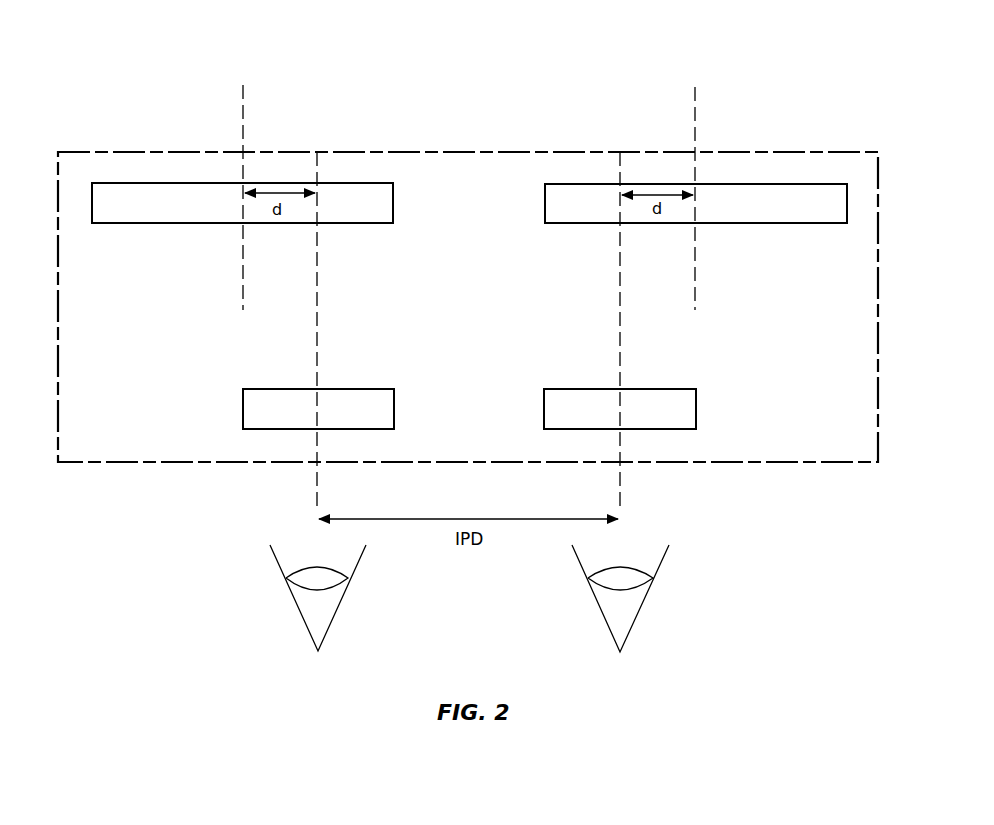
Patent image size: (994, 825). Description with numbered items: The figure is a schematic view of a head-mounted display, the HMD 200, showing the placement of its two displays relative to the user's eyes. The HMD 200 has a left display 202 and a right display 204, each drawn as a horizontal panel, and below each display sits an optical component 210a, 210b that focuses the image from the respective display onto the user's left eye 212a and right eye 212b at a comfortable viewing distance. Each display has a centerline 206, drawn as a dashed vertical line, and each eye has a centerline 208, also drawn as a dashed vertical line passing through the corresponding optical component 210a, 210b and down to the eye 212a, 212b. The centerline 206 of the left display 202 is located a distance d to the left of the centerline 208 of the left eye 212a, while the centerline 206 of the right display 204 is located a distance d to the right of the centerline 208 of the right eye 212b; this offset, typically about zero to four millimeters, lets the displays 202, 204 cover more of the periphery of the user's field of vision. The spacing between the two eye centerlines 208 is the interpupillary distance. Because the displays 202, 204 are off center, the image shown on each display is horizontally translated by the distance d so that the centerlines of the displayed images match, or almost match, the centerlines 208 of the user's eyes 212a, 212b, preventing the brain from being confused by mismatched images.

The HMD 200 is at (122, 71).
The left display 202 is at (242, 203).
The right display 204 is at (696, 203).
The centerline of display 206 is at (240, 100).
The centerline of user's eyes 208 is at (319, 332).
The optical component 210a is at (318, 409).
The optical component 210b is at (620, 409).
The left eye 212a is at (282, 633).
The right eye 212b is at (655, 632).